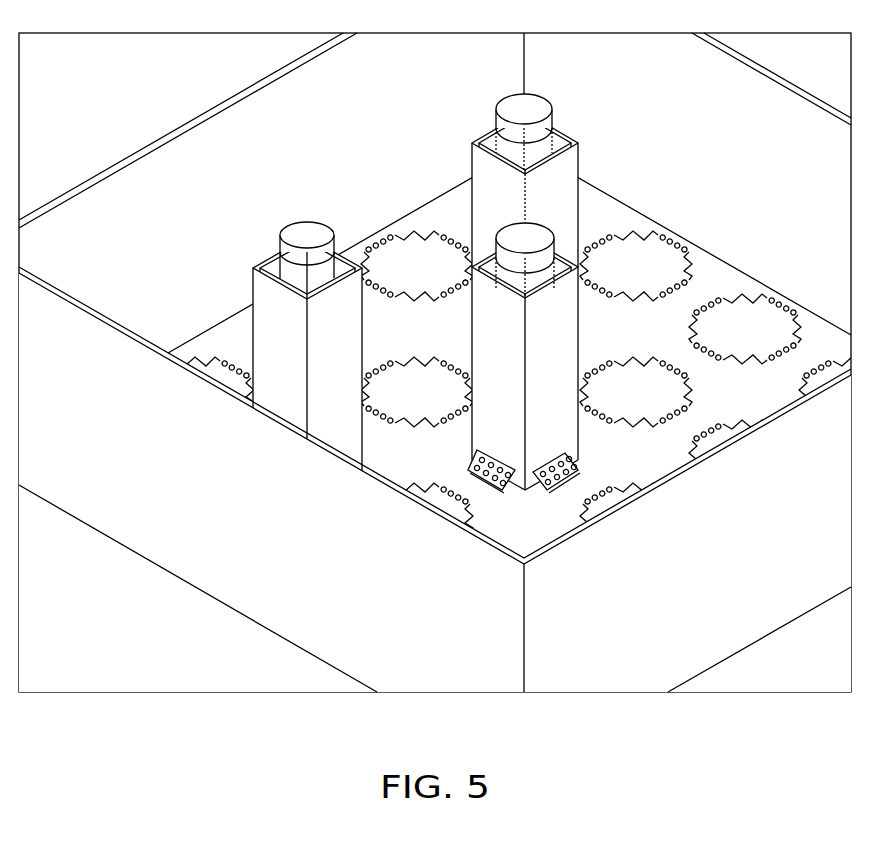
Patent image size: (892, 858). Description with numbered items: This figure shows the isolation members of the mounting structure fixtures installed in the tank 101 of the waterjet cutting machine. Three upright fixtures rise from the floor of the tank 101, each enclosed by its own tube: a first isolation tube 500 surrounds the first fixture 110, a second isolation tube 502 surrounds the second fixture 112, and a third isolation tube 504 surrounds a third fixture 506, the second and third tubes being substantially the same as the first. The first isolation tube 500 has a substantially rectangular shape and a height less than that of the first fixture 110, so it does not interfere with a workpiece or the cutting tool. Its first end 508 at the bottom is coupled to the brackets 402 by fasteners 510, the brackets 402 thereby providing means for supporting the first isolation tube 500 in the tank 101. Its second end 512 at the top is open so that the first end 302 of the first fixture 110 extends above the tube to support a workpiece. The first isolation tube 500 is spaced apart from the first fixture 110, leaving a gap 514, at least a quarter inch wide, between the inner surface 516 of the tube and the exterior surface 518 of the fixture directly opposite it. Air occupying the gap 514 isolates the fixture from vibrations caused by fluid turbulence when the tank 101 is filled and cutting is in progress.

The tank 101 is at (162, 135).
The second fixture 112 is at (518, 121).
The second isolation tube 502 is at (495, 178).
The third fixture 506 is at (290, 232).
The third isolation tube 504 is at (270, 328).
The first fixture 110 is at (492, 238).
The first end of the first fixture 302 is at (537, 232).
The gap 514 is at (558, 264).
The exterior surface of the first fixture 518 is at (535, 273).
The first isolation tube 500 is at (517, 350).
The inner surface of the first isolation tube 516 is at (468, 251).
The second end of the first isolation tube 512 is at (462, 295).
The first end of the first isolation tube 508 is at (474, 428).
The fasteners 510 is at (477, 455).
The brackets 402 is at (478, 477).